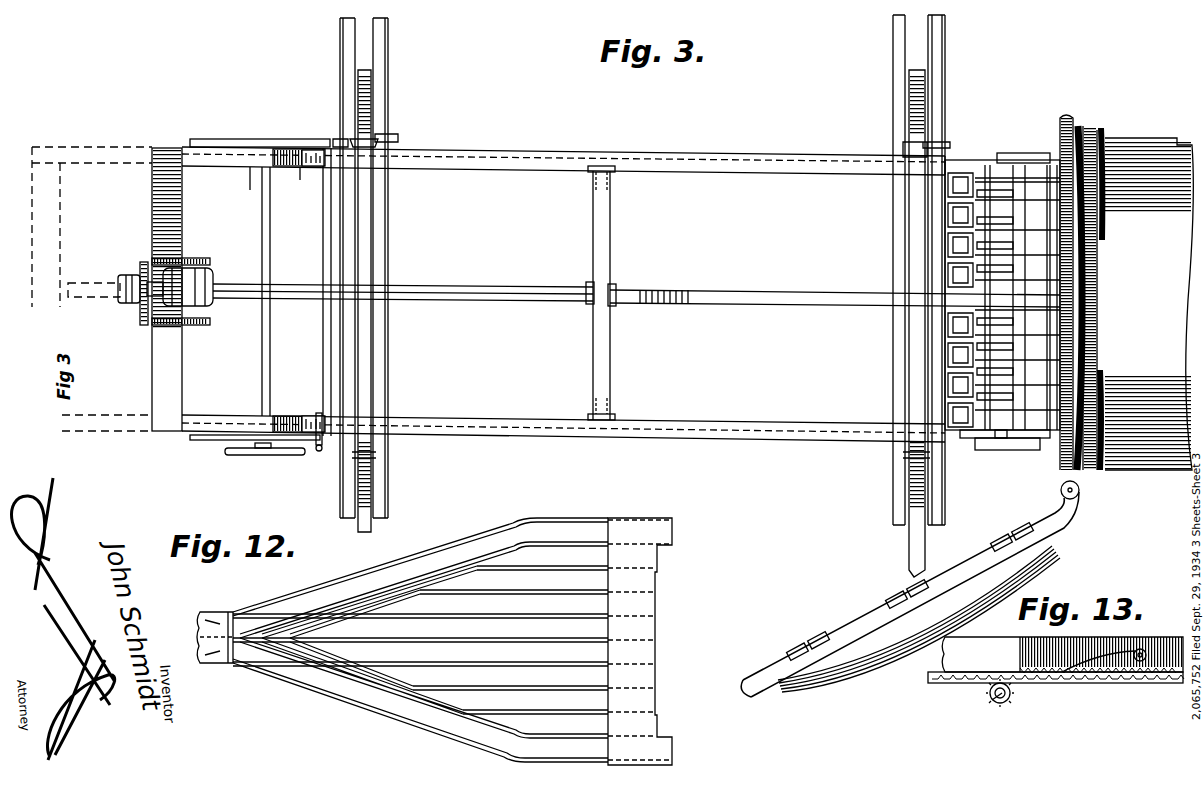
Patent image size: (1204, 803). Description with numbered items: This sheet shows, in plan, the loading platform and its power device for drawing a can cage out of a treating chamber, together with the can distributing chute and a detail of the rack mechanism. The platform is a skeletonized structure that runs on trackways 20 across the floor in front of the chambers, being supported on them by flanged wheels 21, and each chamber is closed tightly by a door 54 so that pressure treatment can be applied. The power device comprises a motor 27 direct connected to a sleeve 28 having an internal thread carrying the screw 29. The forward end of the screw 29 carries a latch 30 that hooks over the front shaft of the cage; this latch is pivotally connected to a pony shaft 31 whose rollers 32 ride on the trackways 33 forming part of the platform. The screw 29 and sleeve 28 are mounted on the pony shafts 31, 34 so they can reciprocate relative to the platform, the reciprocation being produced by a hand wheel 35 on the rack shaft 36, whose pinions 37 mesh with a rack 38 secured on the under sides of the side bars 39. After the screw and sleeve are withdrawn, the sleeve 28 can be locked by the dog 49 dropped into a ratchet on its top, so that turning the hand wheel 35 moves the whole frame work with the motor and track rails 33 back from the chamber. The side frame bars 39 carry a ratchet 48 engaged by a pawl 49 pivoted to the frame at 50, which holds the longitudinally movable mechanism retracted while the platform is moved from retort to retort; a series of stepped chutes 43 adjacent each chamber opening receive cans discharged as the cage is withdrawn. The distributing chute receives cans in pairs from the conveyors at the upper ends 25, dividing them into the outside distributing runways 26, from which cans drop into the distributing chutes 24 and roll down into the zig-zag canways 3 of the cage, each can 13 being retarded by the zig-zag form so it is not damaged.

In FIG. 3, the zig-zag canways 3 is at (864, 178).
In FIG. 3, the can 13 is at (298, 181).
In FIG. 3, the trackways 20 is at (378, 524).
In FIG. 3, the vertical guide posts 21 is at (372, 110).
In FIG. 12, the distributing chutes 24 is at (300, 605).
In FIG. 12, the upper ends of the chutes 25 is at (199, 637).
In FIG. 12, the outside distributing runways 26 is at (350, 590).
In FIG. 3, the motor 27 is at (210, 275).
In FIG. 3, the sleeve 28 is at (478, 302).
In FIG. 3, the screw 29 is at (716, 304).
In FIG. 3, the latch 30 is at (1060, 308).
In FIG. 3, the pony shaft 31 is at (1040, 242).
In FIG. 3, the rollers 32 is at (1012, 450).
In FIG. 3, the trackways 33 is at (990, 438).
In FIG. 3, the pony shaft 34 is at (611, 366).
In FIG. 3, the hand wheel 35 is at (290, 455).
In FIG. 3, the rack shaft 36 is at (266, 342).
In FIG. 13, the rack shaft 36 is at (992, 700).
In FIG. 13, the pinions 37 is at (1006, 710).
In FIG. 13, the rack 38 is at (1082, 686).
In FIG. 3, the side bars 39 is at (222, 178).
In FIG. 13, the side bars 39 is at (1062, 654).
In FIG. 3, the chutes 43 is at (950, 352).
In FIG. 3, the ratchet 48 is at (286, 152).
In FIG. 13, the ratchet 48 is at (1018, 652).
In FIG. 3, the pawl 49 is at (312, 150).
In FIG. 13, the pawl 49 is at (1137, 665).
In FIG. 3, the pivot 50 is at (318, 446).
In FIG. 3, the door 54 is at (868, 612).